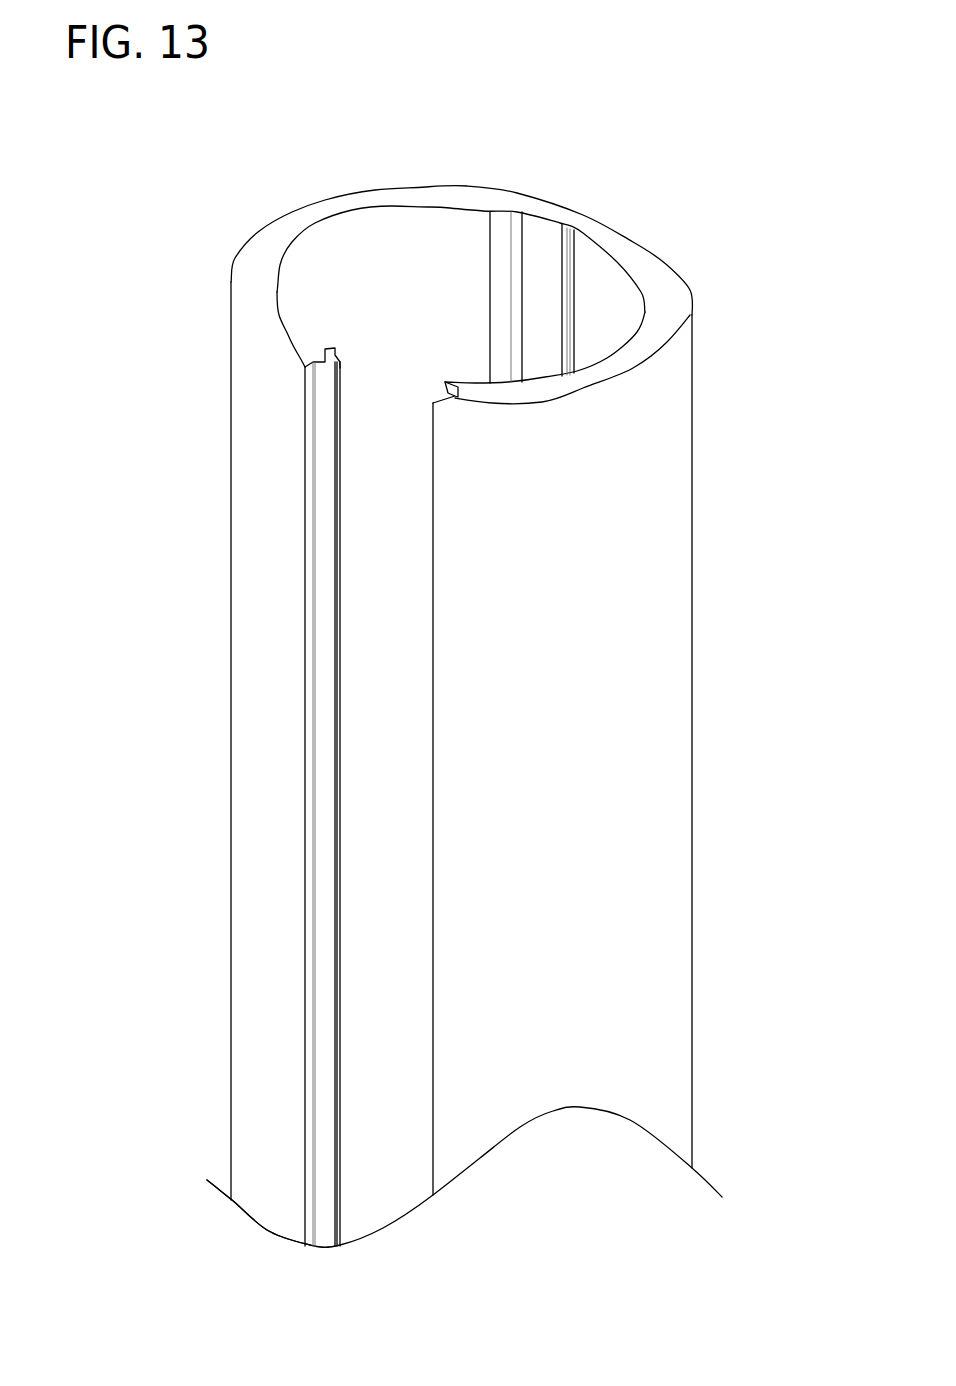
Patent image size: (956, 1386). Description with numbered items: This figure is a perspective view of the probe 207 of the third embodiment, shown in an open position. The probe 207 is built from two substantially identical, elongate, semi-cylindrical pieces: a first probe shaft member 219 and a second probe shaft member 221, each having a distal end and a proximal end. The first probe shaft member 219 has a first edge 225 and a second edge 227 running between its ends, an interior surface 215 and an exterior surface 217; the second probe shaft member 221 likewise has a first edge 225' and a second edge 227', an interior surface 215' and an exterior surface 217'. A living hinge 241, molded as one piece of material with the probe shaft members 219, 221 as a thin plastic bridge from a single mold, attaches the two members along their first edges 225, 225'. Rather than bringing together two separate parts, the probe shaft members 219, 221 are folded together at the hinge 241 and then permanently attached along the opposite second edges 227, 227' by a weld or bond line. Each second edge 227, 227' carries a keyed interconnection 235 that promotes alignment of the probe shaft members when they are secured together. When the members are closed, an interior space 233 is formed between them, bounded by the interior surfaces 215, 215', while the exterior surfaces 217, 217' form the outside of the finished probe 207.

The probe 207 is at (155, 224).
The interior surface 215 is at (618, 333).
The interior surface 215' is at (255, 264).
The exterior surface 217 is at (724, 741).
The exterior surface 217' is at (202, 1080).
The first probe shaft member 219 is at (640, 672).
The second probe shaft member 221 is at (248, 707).
The first edge 225 is at (631, 270).
The first edge 225' is at (451, 248).
The second edge 227 is at (592, 799).
The second edge 227' is at (211, 797).
The interior space 233 is at (416, 335).
The keyed interconnection 235 is at (450, 392).
The living hinge 241 is at (540, 246).